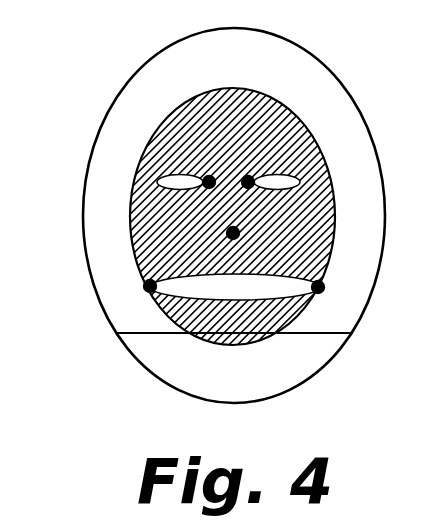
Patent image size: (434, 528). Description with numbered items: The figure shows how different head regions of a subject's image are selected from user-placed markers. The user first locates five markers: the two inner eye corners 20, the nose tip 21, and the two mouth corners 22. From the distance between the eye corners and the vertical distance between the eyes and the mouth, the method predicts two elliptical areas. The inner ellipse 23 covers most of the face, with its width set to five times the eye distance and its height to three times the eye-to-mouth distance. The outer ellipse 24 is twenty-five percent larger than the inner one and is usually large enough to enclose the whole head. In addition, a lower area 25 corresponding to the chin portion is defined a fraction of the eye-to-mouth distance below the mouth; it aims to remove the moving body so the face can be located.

The inner eye corners 20 is at (246, 181).
The nose tip 21 is at (233, 233).
The mouth corners 22 is at (150, 286).
The inner ellipse 23 is at (175, 117).
The outer ellipse 24 is at (285, 63).
The lower area 25 is at (280, 378).